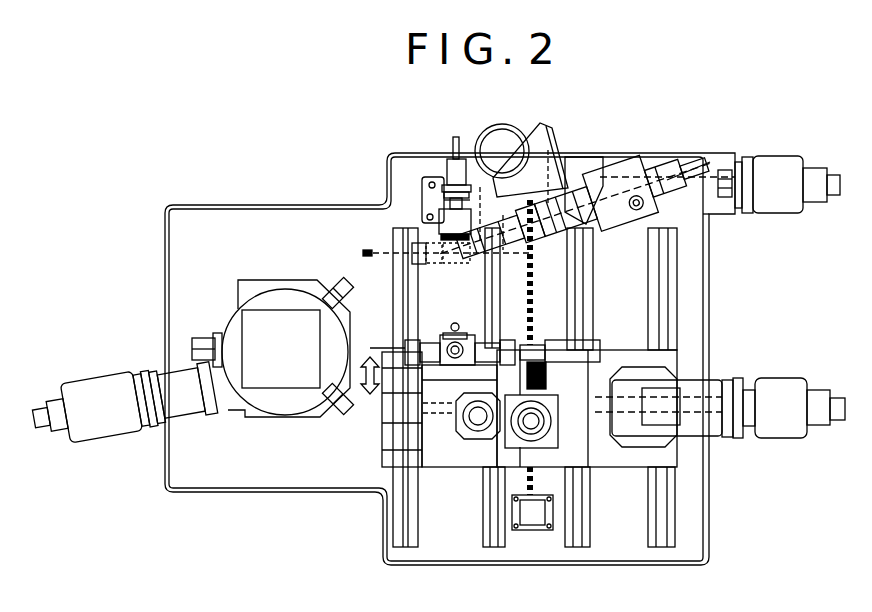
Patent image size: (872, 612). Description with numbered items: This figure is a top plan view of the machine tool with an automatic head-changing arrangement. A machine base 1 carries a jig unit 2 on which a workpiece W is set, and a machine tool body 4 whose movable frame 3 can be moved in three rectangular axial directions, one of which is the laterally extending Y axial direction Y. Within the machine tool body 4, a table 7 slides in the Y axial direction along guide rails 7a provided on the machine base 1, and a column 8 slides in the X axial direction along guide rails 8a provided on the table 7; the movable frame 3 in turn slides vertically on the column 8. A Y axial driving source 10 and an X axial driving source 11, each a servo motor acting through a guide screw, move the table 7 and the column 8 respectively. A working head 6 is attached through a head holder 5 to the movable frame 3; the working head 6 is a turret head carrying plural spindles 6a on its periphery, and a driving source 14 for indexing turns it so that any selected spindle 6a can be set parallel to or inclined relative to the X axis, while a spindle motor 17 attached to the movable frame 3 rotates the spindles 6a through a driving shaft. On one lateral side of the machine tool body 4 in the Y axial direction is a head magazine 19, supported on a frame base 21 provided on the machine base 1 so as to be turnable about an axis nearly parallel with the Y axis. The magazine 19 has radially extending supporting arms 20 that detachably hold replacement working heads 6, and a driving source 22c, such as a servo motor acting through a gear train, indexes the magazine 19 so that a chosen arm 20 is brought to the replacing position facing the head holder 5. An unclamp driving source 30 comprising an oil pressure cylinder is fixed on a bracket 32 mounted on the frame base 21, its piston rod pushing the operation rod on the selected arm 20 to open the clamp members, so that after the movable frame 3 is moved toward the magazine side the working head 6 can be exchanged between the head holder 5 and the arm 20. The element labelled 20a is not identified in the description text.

The machine base 1 is at (268, 216).
The jig unit 2 is at (275, 418).
The movable frame 3 is at (487, 346).
The machine tool body 4 is at (695, 339).
The head holder 5 is at (438, 468).
The working head 6 is at (438, 342).
The spindle 6a is at (374, 346).
The table 7 is at (695, 460).
The guide rails 7a is at (493, 525).
The column 8 is at (581, 440).
The guide rails 8a is at (397, 366).
The Y axial driving source 10 is at (781, 212).
The X axial driving source 11 is at (777, 388).
The driving source for indexing 14 is at (475, 428).
The spindle motor 17 is at (713, 436).
The head magazine 19 is at (578, 146).
The supporting arm 20 is at (586, 170).
The cutting tool 20a is at (438, 214).
The frame base 21 is at (552, 150).
The driving source 22c is at (498, 140).
The unclamp driving source 30 is at (433, 168).
The bracket 32 is at (455, 148).
The workpiece W is at (266, 318).
The Y axial direction Y is at (362, 380).